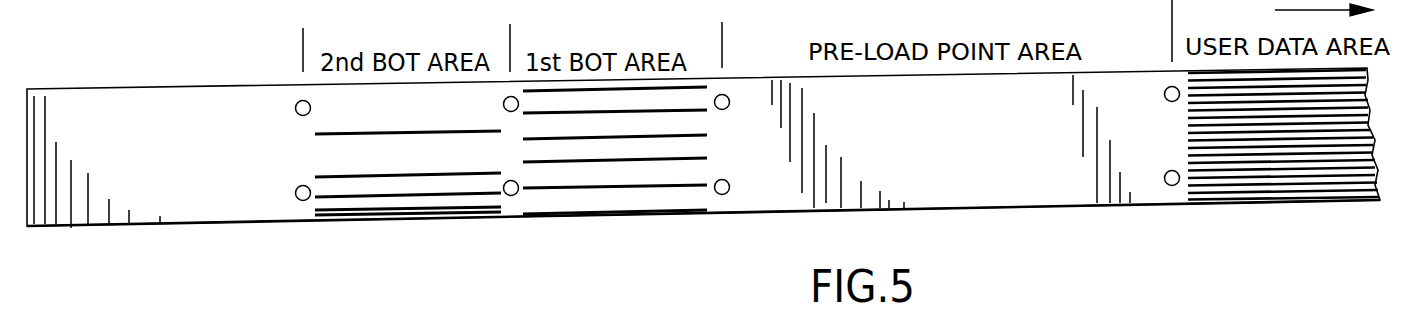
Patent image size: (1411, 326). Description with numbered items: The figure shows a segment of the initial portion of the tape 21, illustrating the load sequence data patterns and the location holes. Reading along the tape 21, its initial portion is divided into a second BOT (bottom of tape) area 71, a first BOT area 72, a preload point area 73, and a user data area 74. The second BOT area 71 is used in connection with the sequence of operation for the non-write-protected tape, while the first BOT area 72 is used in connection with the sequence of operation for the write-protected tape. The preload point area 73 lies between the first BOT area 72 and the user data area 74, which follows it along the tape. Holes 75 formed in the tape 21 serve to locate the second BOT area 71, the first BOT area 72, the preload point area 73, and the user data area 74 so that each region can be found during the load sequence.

The tape 21 is at (66, 89).
The second BOT area 71 is at (395, 218).
The first BOT area 72 is at (667, 209).
The preload point area 73 is at (990, 210).
The user data area 74 is at (1270, 201).
The holes 75 is at (297, 101).